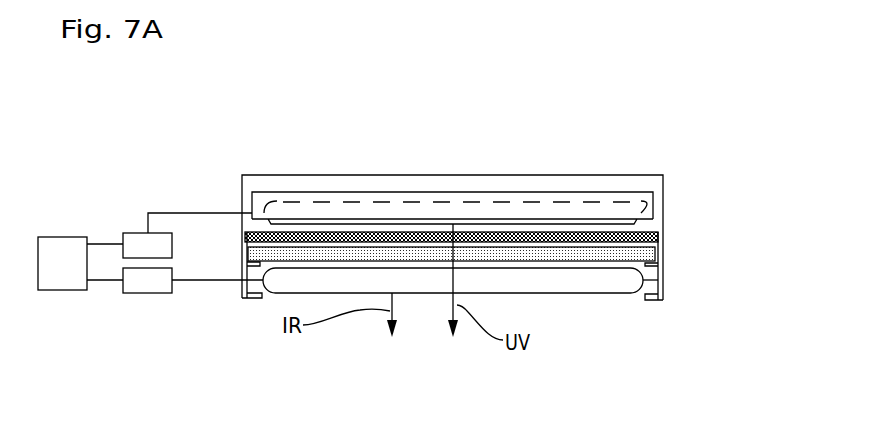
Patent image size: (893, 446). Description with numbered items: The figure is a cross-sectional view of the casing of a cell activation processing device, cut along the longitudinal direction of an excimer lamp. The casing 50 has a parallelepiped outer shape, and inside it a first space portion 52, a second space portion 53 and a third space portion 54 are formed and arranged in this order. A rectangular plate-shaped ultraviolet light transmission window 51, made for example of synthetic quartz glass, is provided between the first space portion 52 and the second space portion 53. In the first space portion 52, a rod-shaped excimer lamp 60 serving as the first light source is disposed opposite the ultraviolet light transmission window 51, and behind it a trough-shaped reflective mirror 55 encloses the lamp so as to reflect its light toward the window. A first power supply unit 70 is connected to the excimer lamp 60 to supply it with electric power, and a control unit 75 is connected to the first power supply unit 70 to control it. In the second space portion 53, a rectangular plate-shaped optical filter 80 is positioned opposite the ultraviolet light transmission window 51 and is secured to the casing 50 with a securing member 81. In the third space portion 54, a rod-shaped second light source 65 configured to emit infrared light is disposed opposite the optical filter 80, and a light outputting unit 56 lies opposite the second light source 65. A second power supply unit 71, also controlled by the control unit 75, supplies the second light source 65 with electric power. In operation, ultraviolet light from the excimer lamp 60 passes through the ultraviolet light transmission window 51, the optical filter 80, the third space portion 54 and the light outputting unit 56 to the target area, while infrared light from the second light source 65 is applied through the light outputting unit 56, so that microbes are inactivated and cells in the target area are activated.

The casing 50 is at (288, 174).
The ultraviolet light transmission window 51 is at (661, 234).
The first space portion 52 is at (645, 184).
The second space portion 53 is at (655, 243).
The third space portion 54 is at (663, 295).
The reflective mirror 55 is at (382, 193).
The light outputting unit 56 is at (634, 312).
The excimer lamp 60 is at (585, 200).
The second light source 65 is at (656, 302).
The first power supply unit 70 is at (135, 240).
The second power supply unit 71 is at (142, 287).
The control unit 75 is at (57, 258).
The optical filter 80 is at (612, 283).
The securing member 81 is at (242, 263).